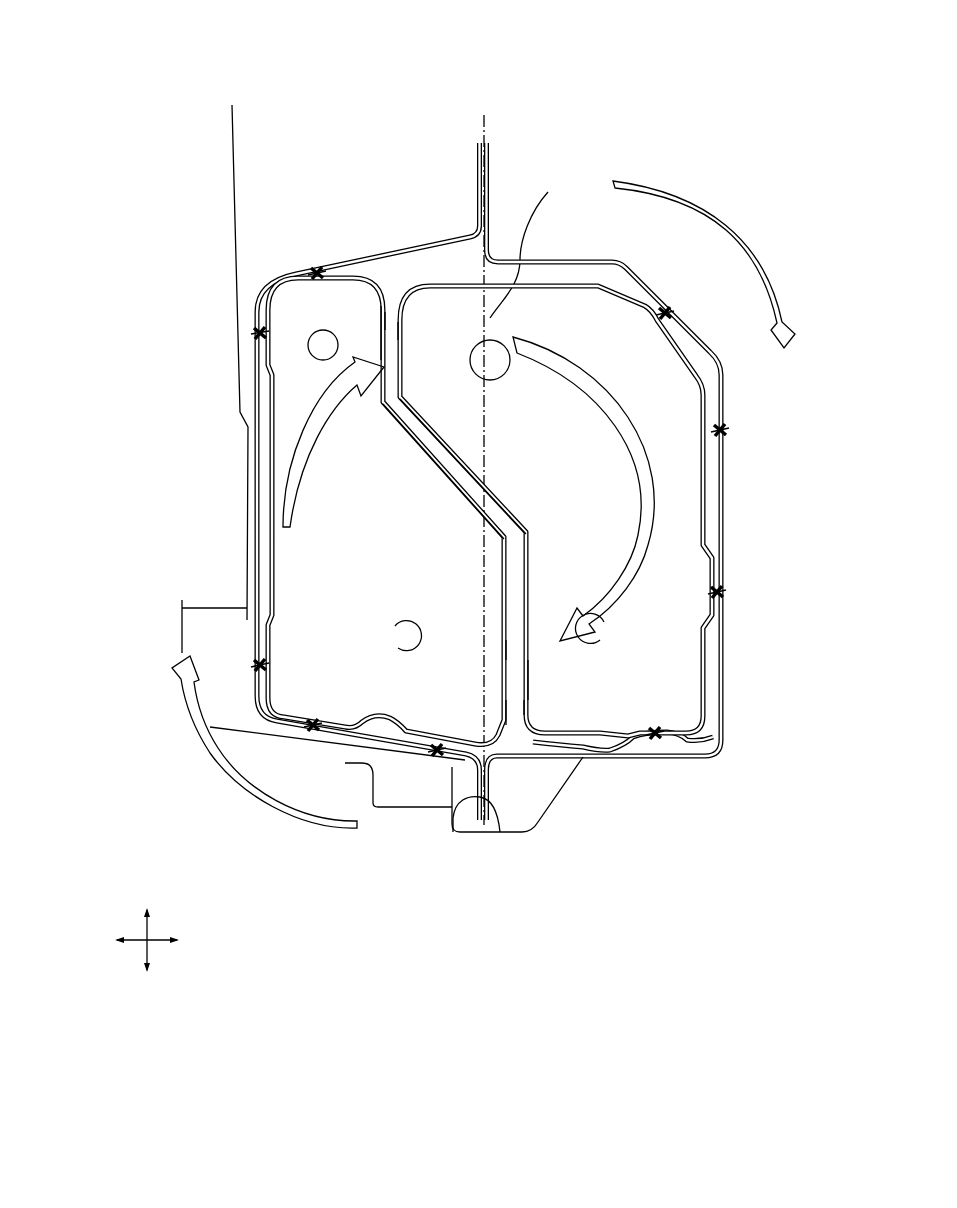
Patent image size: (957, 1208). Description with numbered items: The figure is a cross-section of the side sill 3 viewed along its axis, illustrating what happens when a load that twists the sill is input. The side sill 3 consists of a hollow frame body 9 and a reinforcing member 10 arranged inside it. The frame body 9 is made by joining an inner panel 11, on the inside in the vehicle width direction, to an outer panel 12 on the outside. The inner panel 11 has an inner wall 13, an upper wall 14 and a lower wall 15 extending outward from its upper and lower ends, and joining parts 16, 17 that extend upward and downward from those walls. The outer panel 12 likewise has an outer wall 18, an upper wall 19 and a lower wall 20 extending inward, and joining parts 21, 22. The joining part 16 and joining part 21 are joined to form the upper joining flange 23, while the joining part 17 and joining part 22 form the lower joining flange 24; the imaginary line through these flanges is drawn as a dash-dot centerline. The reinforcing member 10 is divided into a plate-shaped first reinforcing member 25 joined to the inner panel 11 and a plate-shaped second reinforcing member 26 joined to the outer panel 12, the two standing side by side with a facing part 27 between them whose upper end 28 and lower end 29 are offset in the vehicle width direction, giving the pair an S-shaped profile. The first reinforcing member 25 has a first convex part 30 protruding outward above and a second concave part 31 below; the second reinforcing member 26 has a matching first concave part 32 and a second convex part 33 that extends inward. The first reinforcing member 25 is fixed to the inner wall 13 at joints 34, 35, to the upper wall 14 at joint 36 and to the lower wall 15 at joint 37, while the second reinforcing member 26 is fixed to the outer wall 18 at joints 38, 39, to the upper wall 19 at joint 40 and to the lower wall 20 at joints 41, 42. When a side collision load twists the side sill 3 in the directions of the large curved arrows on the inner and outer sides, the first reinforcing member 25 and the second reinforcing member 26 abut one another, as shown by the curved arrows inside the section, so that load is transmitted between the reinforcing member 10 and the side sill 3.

The side sill 3 is at (573, 130).
The frame body 9 is at (480, 489).
The reinforcing member 10 is at (480, 511).
The inner panel 11 is at (699, 337).
The outer panel 12 is at (253, 391).
The inner wall 13 is at (723, 535).
The upper wall 14 is at (627, 267).
The lower wall 15 is at (620, 757).
The joining part 16 is at (488, 185).
The joining part 17 is at (493, 835).
The outer wall 18 is at (255, 443).
The upper wall 19 is at (288, 272).
The lower wall 20 is at (342, 743).
The joining part 21 is at (478, 183).
The joining part 22 is at (465, 835).
The joining flange 23 is at (438, 67).
The joining flange 24 is at (443, 899).
The first reinforcing member 25 is at (690, 483).
The second reinforcing member 26 is at (282, 563).
The facing part 27 is at (440, 459).
The upper end 28 is at (388, 303).
The lower end 29 is at (513, 738).
The first convex part 30 is at (389, 305).
The second concave part 31 is at (515, 697).
The first concave part 32 is at (394, 327).
The second convex part 33 is at (508, 657).
The joint 34 is at (721, 429).
The joint 35 is at (720, 591).
The joint 36 is at (666, 311).
The joint 37 is at (657, 736).
The joint 38 is at (250, 331).
The joint 39 is at (257, 664).
The joint 40 is at (317, 272).
The joint 41 is at (312, 727).
The joint 42 is at (436, 753).